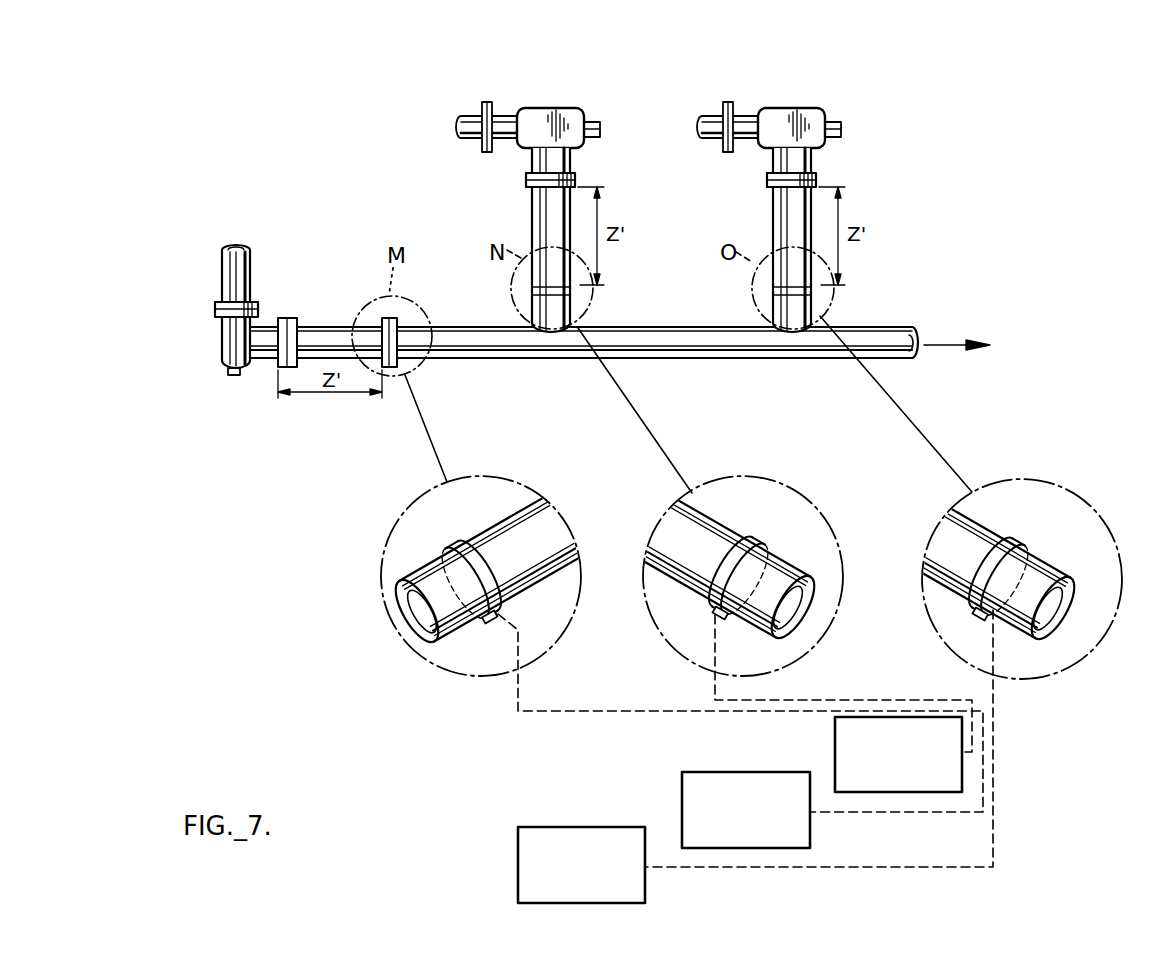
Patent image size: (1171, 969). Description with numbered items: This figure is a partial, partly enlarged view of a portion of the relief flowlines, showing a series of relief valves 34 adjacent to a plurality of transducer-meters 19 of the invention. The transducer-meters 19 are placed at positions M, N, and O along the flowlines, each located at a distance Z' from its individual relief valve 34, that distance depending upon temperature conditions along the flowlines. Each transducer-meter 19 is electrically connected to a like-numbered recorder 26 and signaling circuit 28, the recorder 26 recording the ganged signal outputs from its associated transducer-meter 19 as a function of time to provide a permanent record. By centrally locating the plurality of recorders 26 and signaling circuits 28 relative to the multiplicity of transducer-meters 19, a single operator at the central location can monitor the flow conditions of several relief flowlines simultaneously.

The relief valve 34 is at (228, 338).
The transducer-meter 19 is at (490, 624).
The recorder 26 is at (723, 756).
The signaling circuit 28 is at (835, 738).